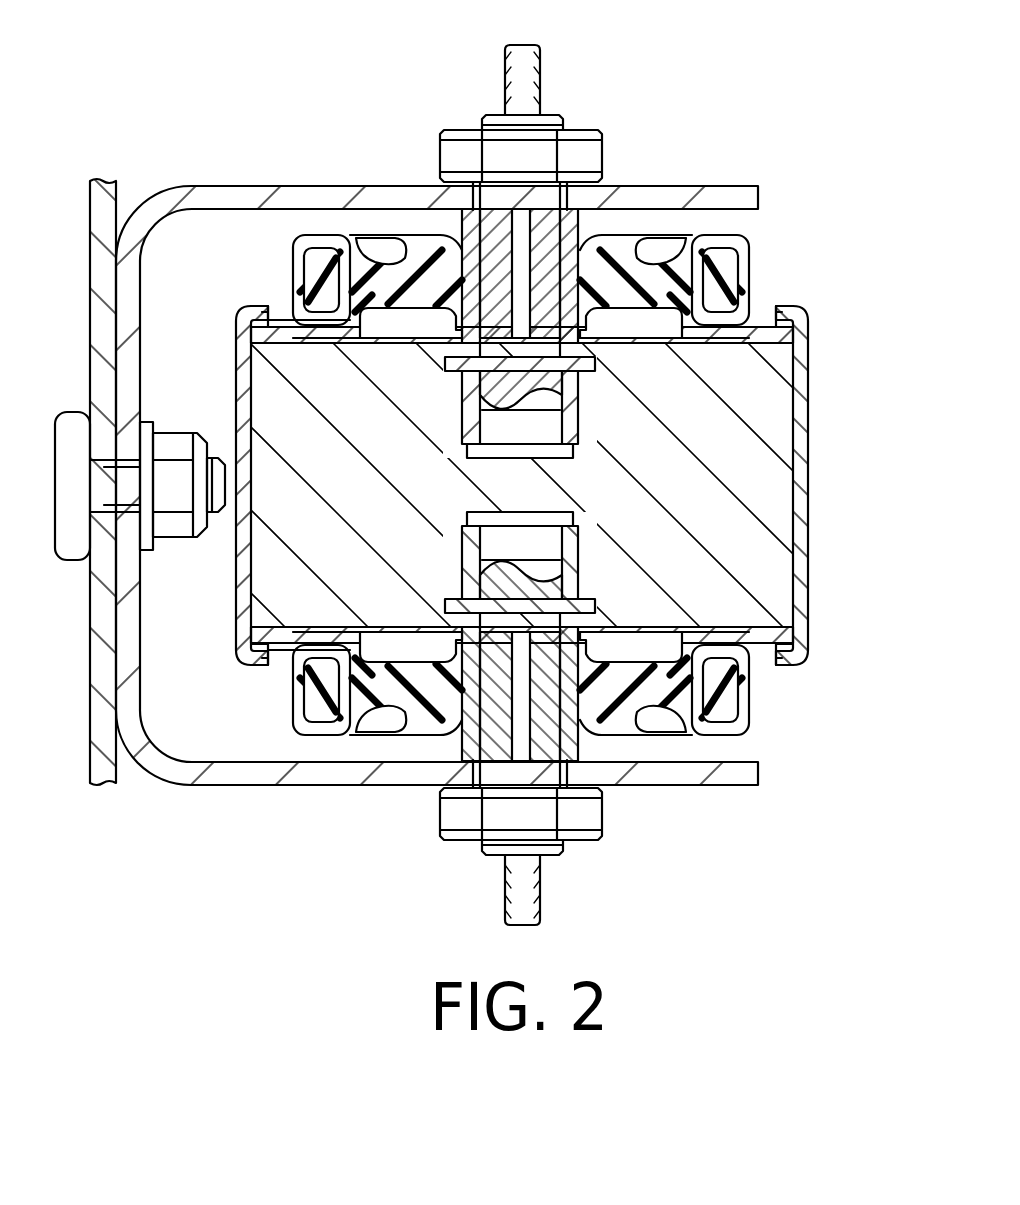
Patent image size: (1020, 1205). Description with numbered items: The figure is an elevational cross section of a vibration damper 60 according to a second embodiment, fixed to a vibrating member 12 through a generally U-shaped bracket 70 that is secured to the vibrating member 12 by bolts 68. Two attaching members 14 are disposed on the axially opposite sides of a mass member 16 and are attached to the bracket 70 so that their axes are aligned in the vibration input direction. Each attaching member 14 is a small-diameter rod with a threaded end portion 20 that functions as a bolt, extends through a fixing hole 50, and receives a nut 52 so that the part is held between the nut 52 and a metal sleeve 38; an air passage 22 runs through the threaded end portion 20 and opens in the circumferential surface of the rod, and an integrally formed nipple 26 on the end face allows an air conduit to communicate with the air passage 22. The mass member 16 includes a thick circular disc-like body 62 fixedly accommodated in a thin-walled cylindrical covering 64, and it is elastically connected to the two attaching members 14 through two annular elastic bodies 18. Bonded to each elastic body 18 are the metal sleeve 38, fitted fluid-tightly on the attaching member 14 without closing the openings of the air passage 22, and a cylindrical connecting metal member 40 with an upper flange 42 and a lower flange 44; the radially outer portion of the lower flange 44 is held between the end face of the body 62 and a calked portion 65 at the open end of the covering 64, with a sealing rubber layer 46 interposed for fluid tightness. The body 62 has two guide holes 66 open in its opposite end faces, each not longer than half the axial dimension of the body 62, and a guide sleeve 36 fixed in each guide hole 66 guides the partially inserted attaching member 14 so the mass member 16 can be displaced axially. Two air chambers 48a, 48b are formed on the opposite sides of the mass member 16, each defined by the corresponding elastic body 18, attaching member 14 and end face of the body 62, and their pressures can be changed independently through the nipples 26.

The vibrating member 12 is at (85, 228).
The attaching member 14 is at (548, 265).
The mass member 16 is at (832, 428).
The elastic body 18 is at (388, 282).
The threaded axially upper end portion 20 is at (543, 112).
The air passage 22 is at (520, 290).
The nipple 26 is at (505, 72).
The guide sleeve 36 is at (580, 432).
The metal sleeve 38 is at (632, 302).
The connecting metal member 40 is at (700, 280).
The upper flange 42 is at (313, 245).
The lower flange 44 is at (762, 330).
The sealing rubber layer 46 is at (292, 352).
The air chamber 48a is at (660, 280).
The air chamber 48b is at (660, 650).
The fixing hole 50 is at (548, 215).
The nut 52 is at (455, 150).
The vibration damper 60 is at (830, 312).
The body 62 is at (760, 500).
The covering 64 is at (232, 535).
The calked portion 65 is at (775, 318).
The guide hole 66 is at (445, 405).
The bolt 68 is at (75, 430).
The bracket 70 is at (222, 195).